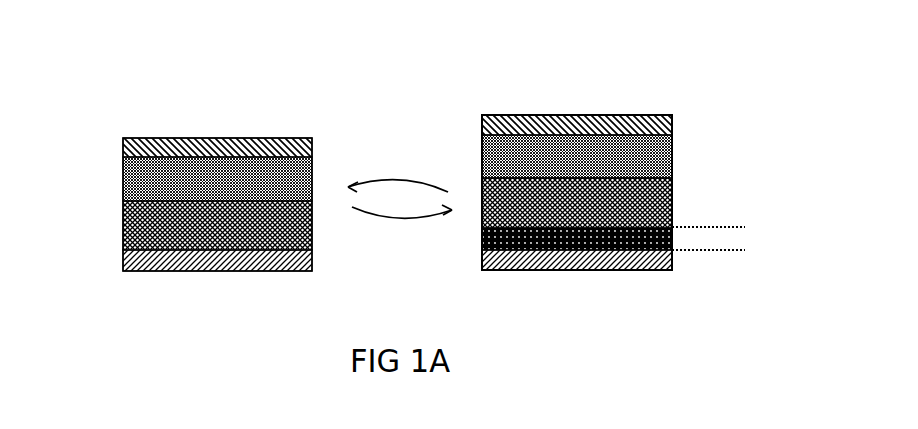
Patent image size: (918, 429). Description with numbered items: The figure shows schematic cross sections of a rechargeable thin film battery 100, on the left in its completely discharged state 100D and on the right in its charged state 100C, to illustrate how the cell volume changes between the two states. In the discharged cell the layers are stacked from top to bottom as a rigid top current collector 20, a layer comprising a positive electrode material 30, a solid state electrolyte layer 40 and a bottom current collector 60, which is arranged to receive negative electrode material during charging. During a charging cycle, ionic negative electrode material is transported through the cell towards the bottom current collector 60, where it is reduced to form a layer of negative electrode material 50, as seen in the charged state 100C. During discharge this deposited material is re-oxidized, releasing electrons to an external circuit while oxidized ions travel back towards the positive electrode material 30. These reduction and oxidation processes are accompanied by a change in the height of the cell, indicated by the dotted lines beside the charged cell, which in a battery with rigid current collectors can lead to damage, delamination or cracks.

The rechargeable thin film battery 100 is at (420, 37).
The completely discharged state 100D is at (192, 152).
The charged state 100C is at (630, 142).
The rigid top current collector 20 is at (153, 147).
The positive electrode material layer 30 is at (153, 185).
The solid state electrolyte layer 40 is at (148, 230).
The negative electrode material layer 50 is at (633, 238).
The bottom current collector 60 is at (142, 264).